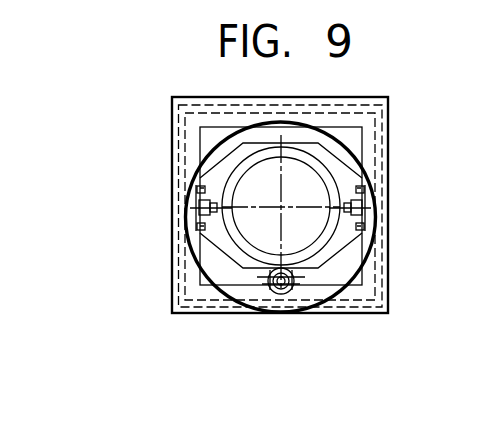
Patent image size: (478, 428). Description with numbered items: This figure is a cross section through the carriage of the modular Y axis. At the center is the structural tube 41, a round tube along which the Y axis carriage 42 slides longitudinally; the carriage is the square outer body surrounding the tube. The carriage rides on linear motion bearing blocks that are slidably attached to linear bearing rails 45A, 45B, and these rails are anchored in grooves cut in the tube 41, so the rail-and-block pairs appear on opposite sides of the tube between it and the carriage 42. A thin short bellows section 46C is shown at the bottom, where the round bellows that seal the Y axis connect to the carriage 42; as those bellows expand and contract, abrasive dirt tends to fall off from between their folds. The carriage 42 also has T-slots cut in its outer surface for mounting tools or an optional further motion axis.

The structural tube 41 is at (333, 167).
The Y axis carriage 42 is at (172, 314).
The linear bearing rail 45A is at (346, 213).
The linear bearing rail 45B is at (197, 214).
The thin short bellows section 46C is at (364, 277).